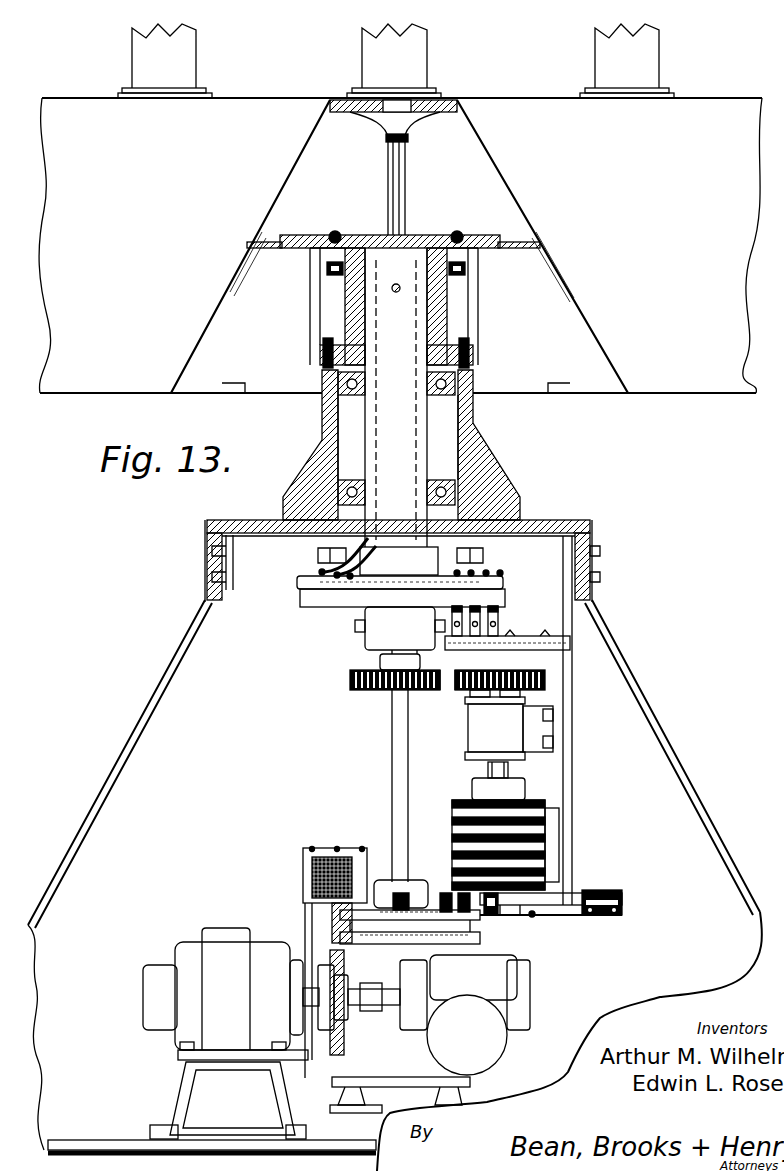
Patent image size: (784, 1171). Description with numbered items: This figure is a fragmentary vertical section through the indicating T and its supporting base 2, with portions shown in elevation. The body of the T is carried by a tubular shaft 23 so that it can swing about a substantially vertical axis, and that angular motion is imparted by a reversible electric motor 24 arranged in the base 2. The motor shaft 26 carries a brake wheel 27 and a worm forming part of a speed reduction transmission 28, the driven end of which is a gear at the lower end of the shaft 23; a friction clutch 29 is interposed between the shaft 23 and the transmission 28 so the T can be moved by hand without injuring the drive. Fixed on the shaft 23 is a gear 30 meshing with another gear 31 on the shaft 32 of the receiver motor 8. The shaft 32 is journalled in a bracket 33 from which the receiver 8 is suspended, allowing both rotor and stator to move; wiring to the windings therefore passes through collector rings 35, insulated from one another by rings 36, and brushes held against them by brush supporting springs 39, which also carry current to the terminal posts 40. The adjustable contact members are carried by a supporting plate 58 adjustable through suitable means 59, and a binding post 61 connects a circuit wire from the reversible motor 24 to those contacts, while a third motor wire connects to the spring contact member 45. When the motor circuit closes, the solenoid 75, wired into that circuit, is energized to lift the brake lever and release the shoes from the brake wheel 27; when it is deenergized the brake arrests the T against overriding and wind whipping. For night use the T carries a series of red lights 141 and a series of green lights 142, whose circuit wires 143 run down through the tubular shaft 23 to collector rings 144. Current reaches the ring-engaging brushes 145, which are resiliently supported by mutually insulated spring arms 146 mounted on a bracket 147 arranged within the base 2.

The base 2 is at (125, 755).
The receiver motor 8 is at (528, 790).
The T shaft 23 is at (398, 347).
The reversible electric motor 24 is at (224, 940).
The motor shaft 26 is at (377, 1000).
The brake wheel 27 is at (355, 1010).
The speed reduction transmission 28 is at (485, 1027).
The friction clutch 29 is at (432, 945).
The gear 30 is at (350, 681).
The gear 31 is at (547, 681).
The motor shaft 32 is at (495, 771).
The bracket 33 is at (512, 733).
The collector rings 35 is at (522, 826).
The insulating rings 36 is at (522, 846).
The brush supporting springs 39 is at (522, 868).
The terminal posts 40 is at (522, 882).
The spring contact member 45 is at (563, 905).
The supporting plate 58 is at (512, 915).
The adjusting means 59 is at (536, 912).
The binding post 61 is at (490, 915).
The solenoid 75 is at (308, 875).
The red lights 141 is at (417, 43).
The green lights 142 is at (186, 43).
The circuit wires 143 is at (388, 186).
The collector rings 144 is at (300, 596).
The brushes 145 is at (486, 610).
The spring arms 146 is at (480, 630).
The bracket 147 is at (510, 650).